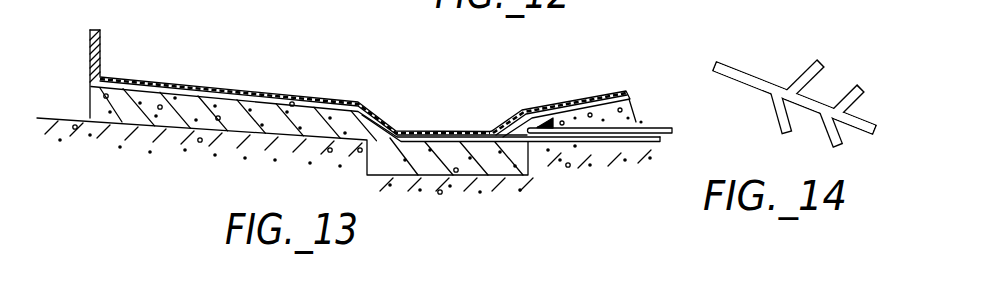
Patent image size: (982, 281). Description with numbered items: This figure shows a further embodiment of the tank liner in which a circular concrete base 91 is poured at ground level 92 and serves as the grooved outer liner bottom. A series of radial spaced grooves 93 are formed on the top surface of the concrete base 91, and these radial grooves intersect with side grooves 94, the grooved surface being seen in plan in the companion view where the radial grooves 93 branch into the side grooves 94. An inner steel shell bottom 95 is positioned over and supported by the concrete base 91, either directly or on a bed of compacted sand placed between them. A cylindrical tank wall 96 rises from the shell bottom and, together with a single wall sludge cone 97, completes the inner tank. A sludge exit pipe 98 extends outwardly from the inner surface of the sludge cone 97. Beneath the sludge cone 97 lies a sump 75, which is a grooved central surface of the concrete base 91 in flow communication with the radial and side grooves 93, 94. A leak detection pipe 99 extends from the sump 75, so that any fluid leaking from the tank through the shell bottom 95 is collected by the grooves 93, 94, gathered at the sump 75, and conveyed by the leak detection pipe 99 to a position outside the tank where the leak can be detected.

In FIG. 13, the sump 75 is at (467, 141).
In FIG. 13, the concrete base 91 is at (88, 95).
In FIG. 13, the ground level 92 is at (77, 115).
In FIG. 13, the radial spaced grooves 93 is at (161, 84).
In FIG. 14, the radial spaced grooves 93 is at (738, 70).
In FIG. 14, the side grooves 94 is at (797, 73).
In FIG. 13, the inner steel shell bottom 95 is at (291, 95).
In FIG. 13, the cylindrical tank wall 96 is at (90, 51).
In FIG. 13, the single wall sludge cone 97 is at (385, 122).
In FIG. 13, the sludge exit pipe 98 is at (633, 117).
In FIG. 13, the leak detection pipe 99 is at (575, 148).